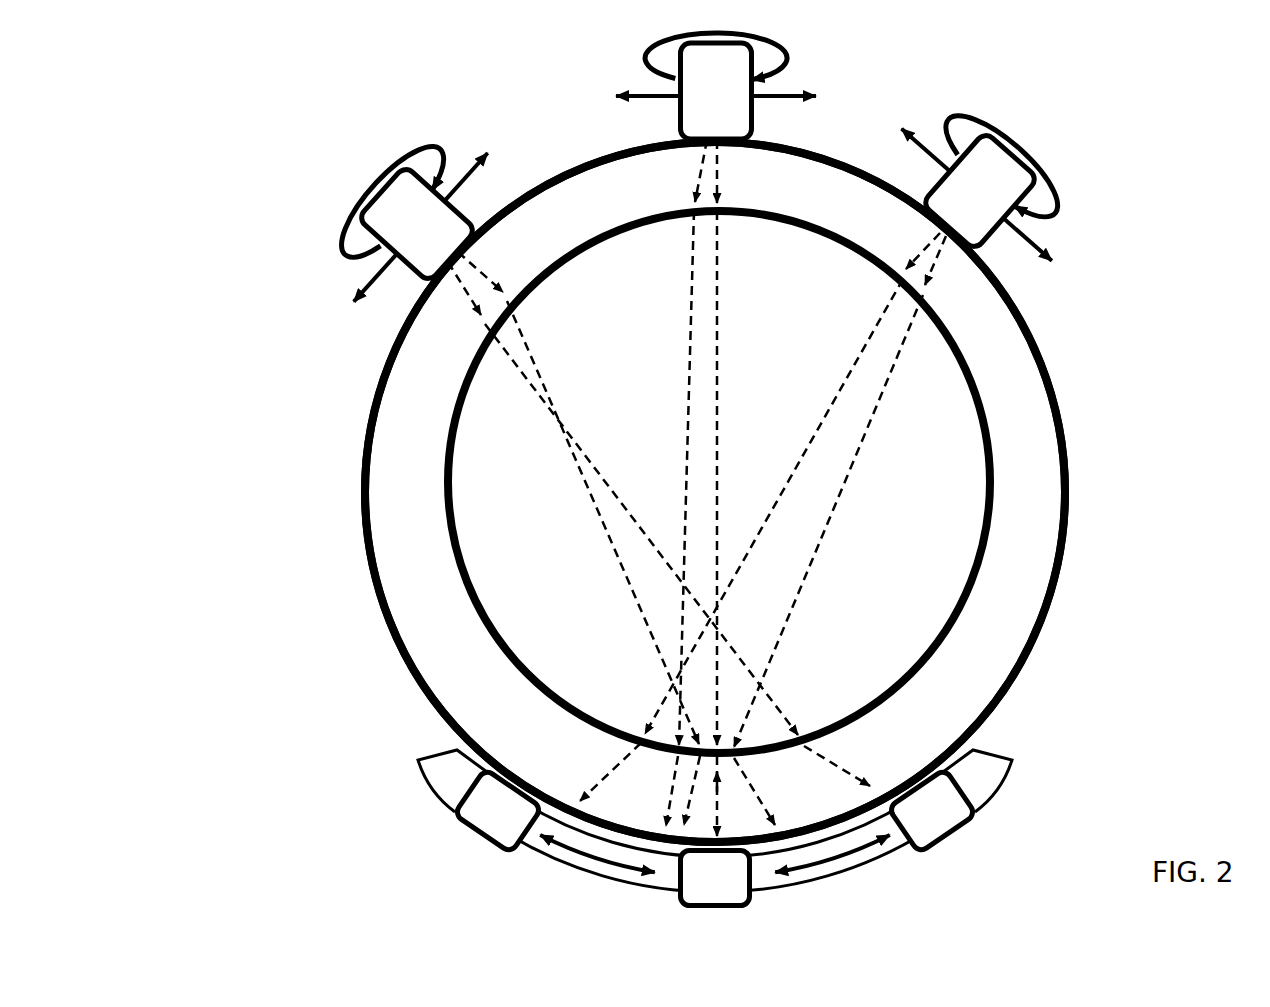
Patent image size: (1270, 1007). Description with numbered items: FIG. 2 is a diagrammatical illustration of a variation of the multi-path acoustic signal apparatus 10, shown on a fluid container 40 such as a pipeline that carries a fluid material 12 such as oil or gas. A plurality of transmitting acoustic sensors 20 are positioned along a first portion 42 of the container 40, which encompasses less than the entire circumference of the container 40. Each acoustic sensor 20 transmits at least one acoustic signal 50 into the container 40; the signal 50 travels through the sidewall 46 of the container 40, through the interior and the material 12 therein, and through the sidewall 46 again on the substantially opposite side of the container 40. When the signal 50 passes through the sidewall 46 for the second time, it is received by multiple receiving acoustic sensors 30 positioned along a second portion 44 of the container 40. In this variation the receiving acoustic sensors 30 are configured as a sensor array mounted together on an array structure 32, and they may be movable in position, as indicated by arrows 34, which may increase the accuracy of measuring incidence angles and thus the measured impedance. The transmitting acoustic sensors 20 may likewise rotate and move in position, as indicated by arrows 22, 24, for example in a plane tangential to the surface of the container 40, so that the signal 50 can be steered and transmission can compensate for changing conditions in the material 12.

The multi-path acoustic signal apparatus 10 is at (183, 147).
The material 12 is at (546, 533).
The acoustic sensors 20 is at (455, 200).
The arrows 22 is at (420, 152).
The arrows 24 is at (376, 266).
The acoustic sensors 30 is at (483, 830).
The array structure 32 is at (1000, 772).
The arrows 34 is at (594, 868).
The fluid container 40 is at (1068, 468).
The first portion 42 is at (322, 88).
The second portion 44 is at (376, 765).
The sidewall 46 is at (1015, 385).
The acoustic signal 50 is at (636, 538).